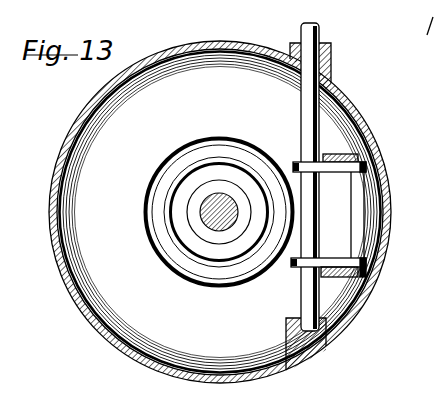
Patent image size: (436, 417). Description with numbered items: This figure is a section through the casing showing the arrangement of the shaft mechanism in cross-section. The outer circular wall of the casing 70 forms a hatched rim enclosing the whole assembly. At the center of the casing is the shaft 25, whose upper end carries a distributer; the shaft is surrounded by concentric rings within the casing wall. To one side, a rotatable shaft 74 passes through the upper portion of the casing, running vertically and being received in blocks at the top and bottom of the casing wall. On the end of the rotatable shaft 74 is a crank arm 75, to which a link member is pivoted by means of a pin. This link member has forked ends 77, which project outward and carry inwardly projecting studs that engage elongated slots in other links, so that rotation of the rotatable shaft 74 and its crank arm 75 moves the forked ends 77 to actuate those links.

The wheel rim 70 is at (217, 191).
The shaft 25 is at (215, 200).
The rotatable shaft 74 is at (313, 23).
The crank arm 75 is at (338, 259).
The forked end of link member 77 is at (328, 276).